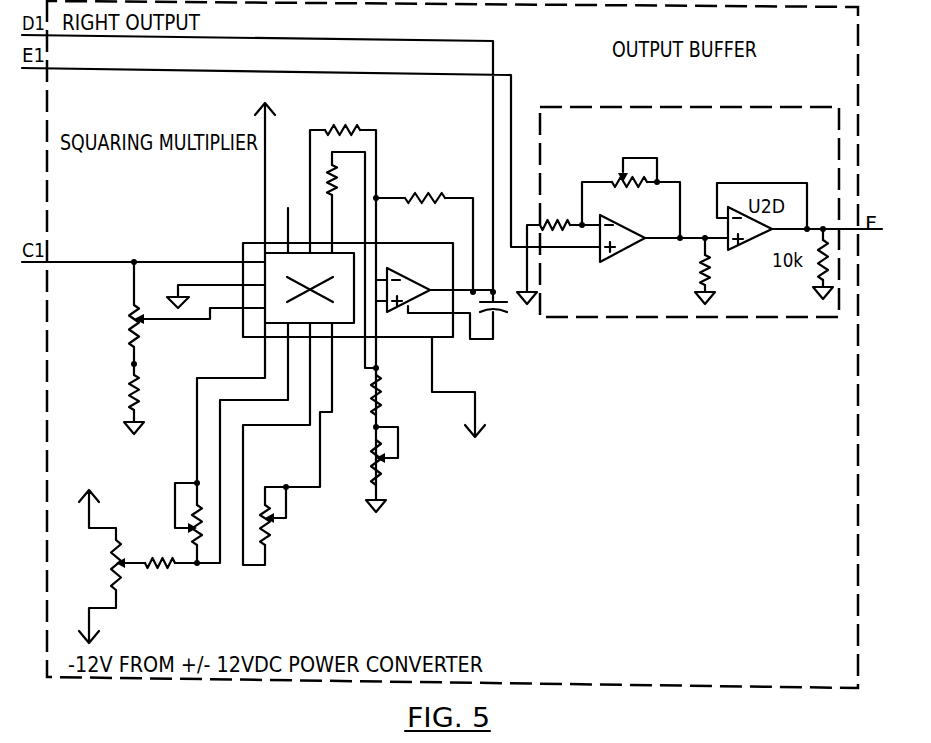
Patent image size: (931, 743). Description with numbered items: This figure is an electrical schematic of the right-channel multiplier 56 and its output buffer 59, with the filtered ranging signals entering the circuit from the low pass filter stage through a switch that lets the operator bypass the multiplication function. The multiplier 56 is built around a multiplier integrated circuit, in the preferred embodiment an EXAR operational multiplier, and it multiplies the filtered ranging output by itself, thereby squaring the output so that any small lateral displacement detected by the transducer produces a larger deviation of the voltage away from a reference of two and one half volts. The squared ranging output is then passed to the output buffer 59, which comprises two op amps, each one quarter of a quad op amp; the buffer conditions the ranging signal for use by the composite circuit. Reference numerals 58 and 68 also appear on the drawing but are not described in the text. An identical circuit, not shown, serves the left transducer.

The multiplier 56 is at (542, 685).
The squaring multiplier 58 is at (350, 337).
The output buffer 59 is at (672, 320).
The circuit element (continued on following sheet) 68 is at (256, 737).